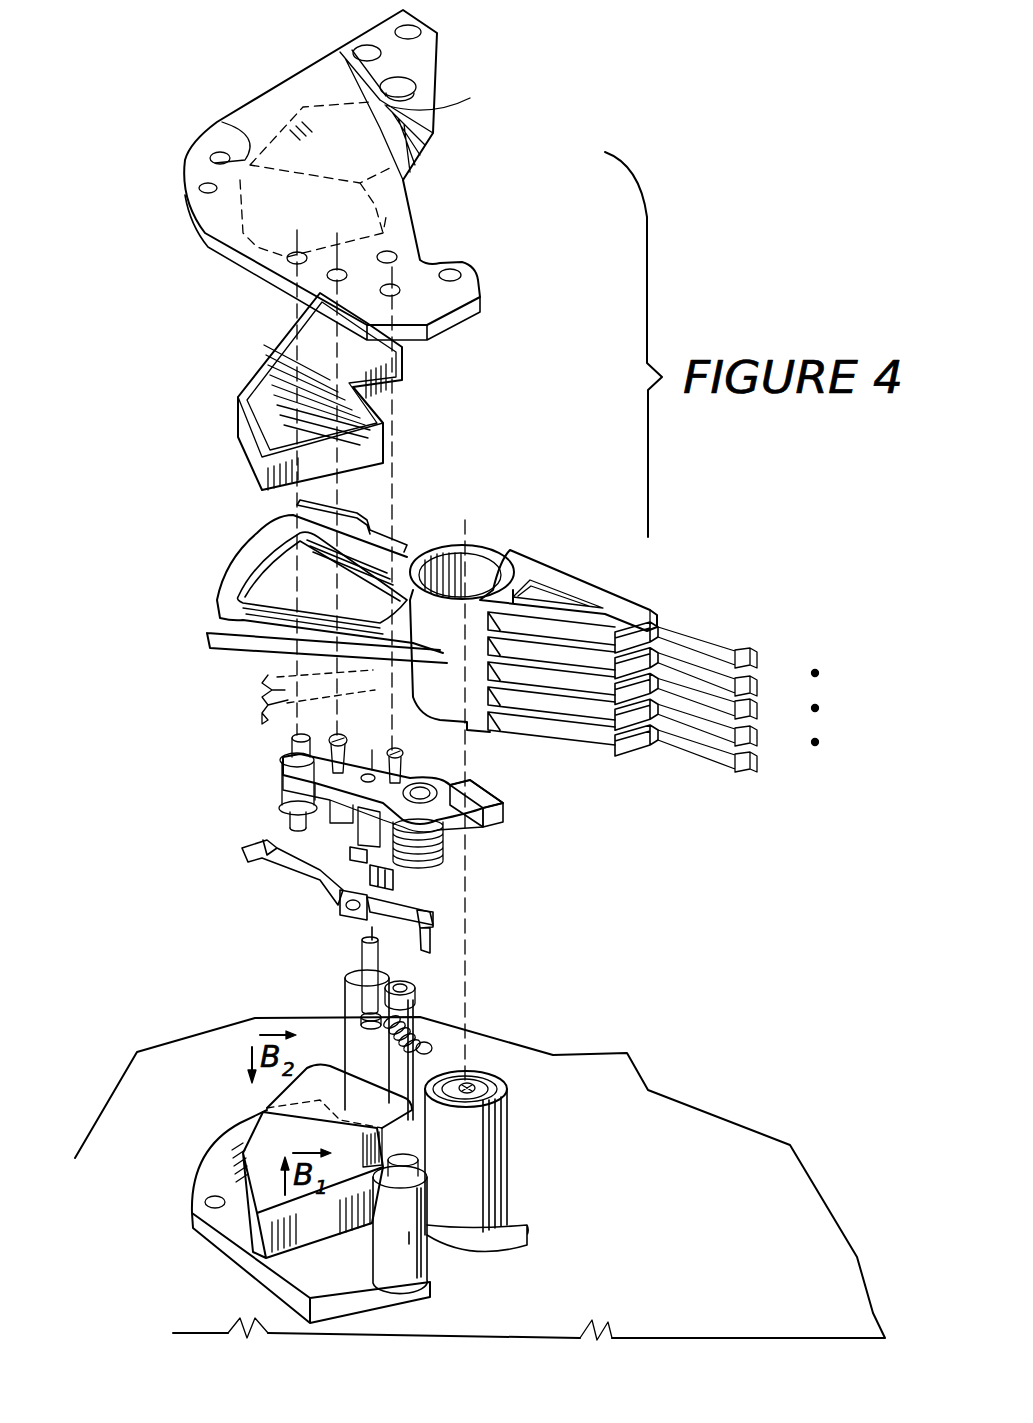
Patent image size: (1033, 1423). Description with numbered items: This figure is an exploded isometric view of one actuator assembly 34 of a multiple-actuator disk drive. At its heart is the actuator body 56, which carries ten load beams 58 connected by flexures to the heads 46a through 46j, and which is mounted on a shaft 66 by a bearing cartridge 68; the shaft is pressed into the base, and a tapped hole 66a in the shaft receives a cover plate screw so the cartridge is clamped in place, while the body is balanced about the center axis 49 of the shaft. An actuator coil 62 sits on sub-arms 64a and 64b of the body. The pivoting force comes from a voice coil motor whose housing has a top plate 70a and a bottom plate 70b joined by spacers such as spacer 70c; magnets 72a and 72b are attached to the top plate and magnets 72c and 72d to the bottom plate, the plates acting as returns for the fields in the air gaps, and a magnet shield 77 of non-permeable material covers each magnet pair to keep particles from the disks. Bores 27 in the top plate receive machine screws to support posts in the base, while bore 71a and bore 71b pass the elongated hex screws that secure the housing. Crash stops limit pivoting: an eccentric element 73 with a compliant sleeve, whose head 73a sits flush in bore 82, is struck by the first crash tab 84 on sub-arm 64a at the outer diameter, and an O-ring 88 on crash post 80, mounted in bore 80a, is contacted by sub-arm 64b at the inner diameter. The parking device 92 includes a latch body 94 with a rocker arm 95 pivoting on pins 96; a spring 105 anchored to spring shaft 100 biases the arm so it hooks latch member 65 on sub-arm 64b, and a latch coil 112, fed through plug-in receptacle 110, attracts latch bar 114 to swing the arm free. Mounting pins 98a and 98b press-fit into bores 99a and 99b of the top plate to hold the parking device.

The bores 27 is at (452, 272).
The bore 82 is at (446, 84).
The magnet 72a is at (440, 123).
The magnet 72b is at (405, 214).
The bore 71a is at (218, 153).
The top plate 70a is at (193, 216).
The bore 80a is at (268, 280).
The bore 99a is at (335, 277).
The bore 99b is at (457, 297).
The magnet shield 77 is at (372, 447).
The first crash tab 84 is at (363, 527).
The actuator body sub-arm 64a is at (438, 532).
The actuator coil 62 is at (248, 557).
The center axis 49 is at (465, 532).
The latch member 65 is at (203, 637).
The actuator body sub-arm 64b is at (275, 643).
The actuator body 56 is at (520, 570).
The load beams 58 is at (673, 633).
The head 46a is at (752, 652).
The head 46j is at (745, 770).
The actuator assembly 34 is at (500, 752).
The mounting pin 98a is at (341, 737).
The mounting pin 98b is at (404, 753).
The O-ring 88 is at (289, 803).
The crash post 80 is at (300, 820).
The latch body 94 is at (490, 817).
The plug-in receptacle 110 is at (477, 793).
The latch coil 112 is at (430, 860).
The rocker arm 95 is at (297, 883).
The pins 96 is at (327, 887).
The latch bar 114 is at (427, 900).
The parking device 92 is at (520, 872).
The spring shaft 100 is at (363, 957).
The spring 105 is at (362, 1026).
The spacer 70c is at (407, 1260).
The head 73a is at (420, 988).
The eccentric element 73 is at (413, 1022).
The shaft 66 is at (490, 1087).
The tapped hole 66a is at (483, 1075).
The bearing cartridge 68 is at (508, 1145).
The bottom plate 70b is at (232, 1262).
The bore 71b is at (208, 1197).
The magnet 72c is at (318, 1230).
The magnet 72d is at (267, 1112).